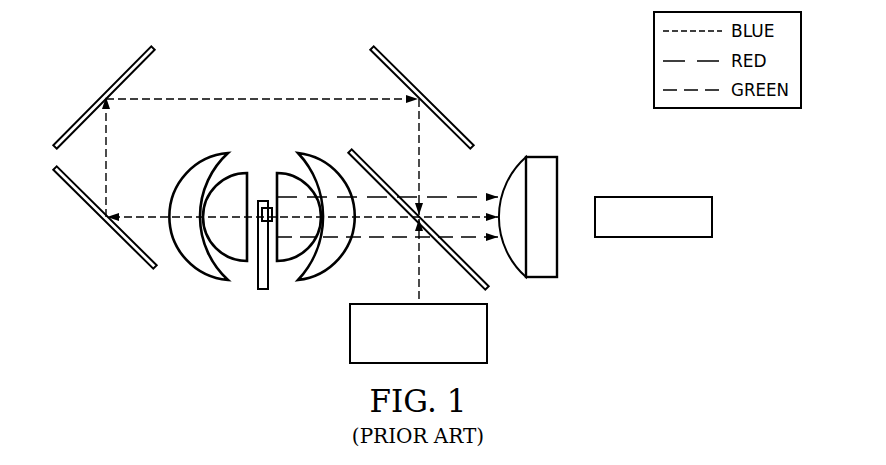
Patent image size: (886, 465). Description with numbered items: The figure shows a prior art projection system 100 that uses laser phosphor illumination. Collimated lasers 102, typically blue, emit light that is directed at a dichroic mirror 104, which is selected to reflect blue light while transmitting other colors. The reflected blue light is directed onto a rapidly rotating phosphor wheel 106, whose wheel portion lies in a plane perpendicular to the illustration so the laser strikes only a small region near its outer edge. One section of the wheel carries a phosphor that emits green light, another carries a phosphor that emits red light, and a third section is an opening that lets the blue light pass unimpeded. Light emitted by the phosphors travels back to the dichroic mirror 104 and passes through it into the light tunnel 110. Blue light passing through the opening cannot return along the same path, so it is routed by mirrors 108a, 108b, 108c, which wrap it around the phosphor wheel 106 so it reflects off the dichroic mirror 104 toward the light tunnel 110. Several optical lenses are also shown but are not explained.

The projection system 100 is at (537, 117).
The collimated lasers 102 is at (488, 332).
The dichroic mirror 104 is at (378, 171).
The phosphor wheel 106 is at (261, 291).
The mirror 108a is at (110, 224).
The mirror 108b is at (112, 90).
The mirror 108c is at (440, 80).
The light tunnel 110 is at (654, 195).